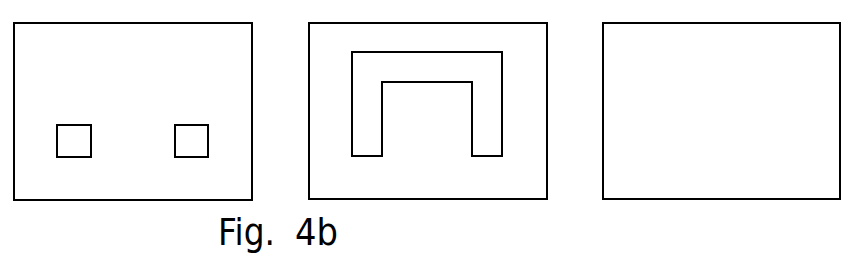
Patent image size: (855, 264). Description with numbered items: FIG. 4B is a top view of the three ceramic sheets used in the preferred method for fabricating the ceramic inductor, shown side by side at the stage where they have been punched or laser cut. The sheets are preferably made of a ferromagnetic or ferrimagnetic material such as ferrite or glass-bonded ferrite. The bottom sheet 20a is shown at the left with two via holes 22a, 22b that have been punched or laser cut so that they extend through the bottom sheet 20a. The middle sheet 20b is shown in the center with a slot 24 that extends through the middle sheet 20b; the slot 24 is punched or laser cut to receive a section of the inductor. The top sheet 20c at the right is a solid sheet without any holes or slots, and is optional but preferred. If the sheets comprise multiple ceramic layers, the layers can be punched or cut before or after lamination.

The bottom sheet 20a is at (133, 111).
The middle sheet 20b is at (428, 111).
The top sheet 20c is at (721, 111).
The via hole 22a is at (73, 142).
The via hole 22b is at (192, 142).
The slot 24 is at (441, 68).